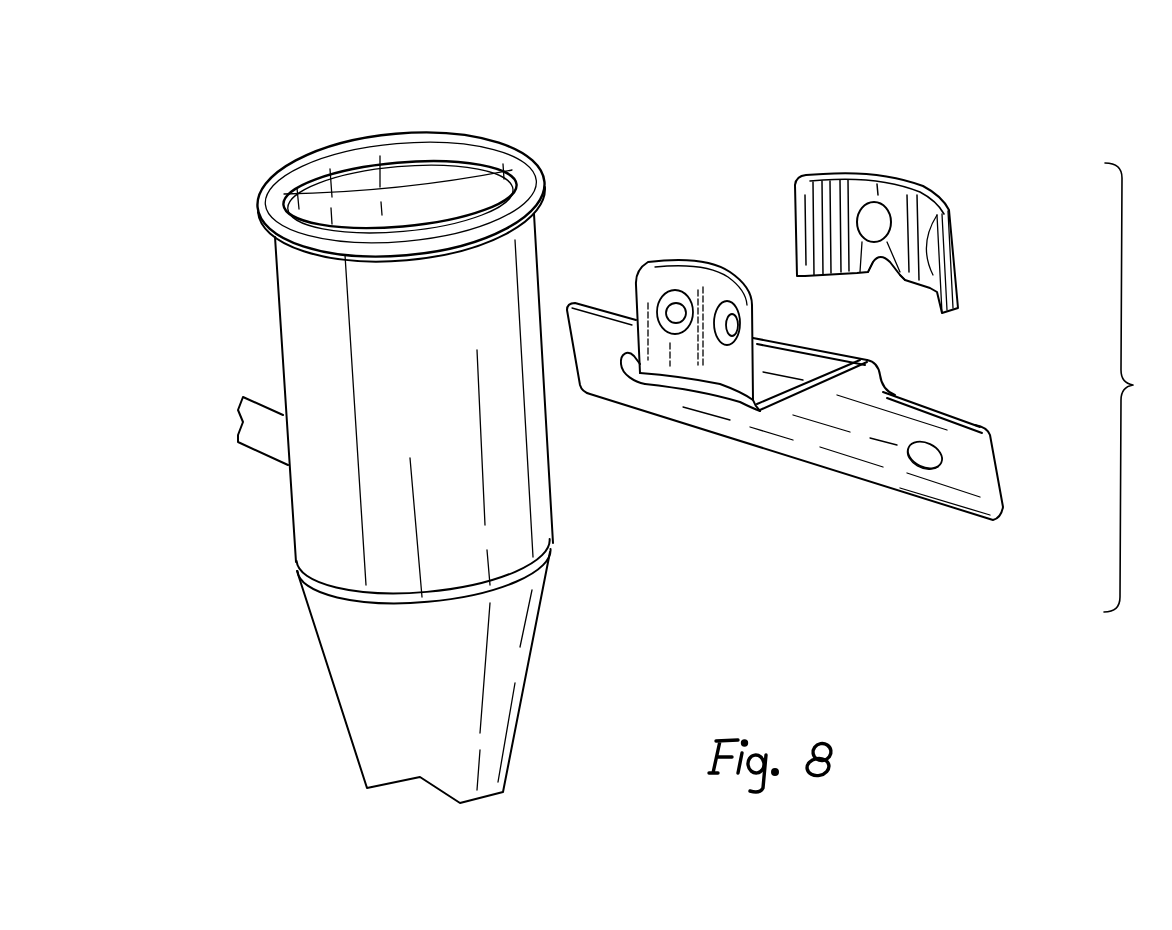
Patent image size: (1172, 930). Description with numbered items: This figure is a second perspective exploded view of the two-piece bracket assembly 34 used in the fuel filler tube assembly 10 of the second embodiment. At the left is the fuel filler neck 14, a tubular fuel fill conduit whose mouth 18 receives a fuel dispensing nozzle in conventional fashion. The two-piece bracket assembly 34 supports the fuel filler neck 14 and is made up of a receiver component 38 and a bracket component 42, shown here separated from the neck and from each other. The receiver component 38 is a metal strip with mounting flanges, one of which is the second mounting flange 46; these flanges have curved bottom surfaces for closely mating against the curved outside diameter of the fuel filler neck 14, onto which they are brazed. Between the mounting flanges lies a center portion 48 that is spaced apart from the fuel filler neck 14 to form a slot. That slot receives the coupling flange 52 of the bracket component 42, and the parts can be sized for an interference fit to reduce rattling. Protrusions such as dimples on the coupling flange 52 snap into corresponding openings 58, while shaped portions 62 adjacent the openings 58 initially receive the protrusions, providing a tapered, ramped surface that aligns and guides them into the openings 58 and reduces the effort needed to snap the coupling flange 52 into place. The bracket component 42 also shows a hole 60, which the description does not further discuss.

The fuel filler tube assembly 10 is at (232, 105).
The fuel filler neck 14 is at (493, 330).
The mouth 18 is at (418, 170).
The two-piece bracket assembly 34 is at (1134, 387).
The receiver component 38 is at (957, 193).
The bracket component 42 is at (807, 215).
The second mounting flange 46 is at (942, 272).
The center portion 48 is at (898, 174).
The coupling flange 52 is at (680, 273).
The openings 58 is at (869, 210).
The mounting hole 60 is at (634, 361).
The shaped portions 62 is at (928, 292).